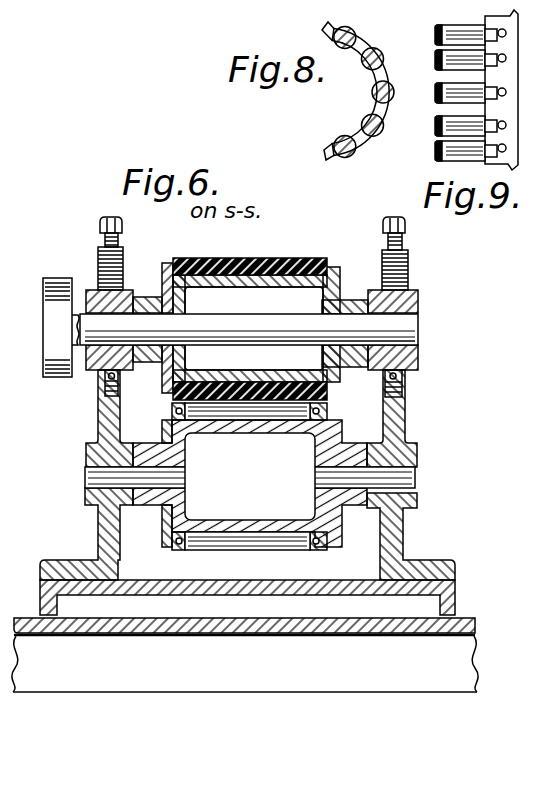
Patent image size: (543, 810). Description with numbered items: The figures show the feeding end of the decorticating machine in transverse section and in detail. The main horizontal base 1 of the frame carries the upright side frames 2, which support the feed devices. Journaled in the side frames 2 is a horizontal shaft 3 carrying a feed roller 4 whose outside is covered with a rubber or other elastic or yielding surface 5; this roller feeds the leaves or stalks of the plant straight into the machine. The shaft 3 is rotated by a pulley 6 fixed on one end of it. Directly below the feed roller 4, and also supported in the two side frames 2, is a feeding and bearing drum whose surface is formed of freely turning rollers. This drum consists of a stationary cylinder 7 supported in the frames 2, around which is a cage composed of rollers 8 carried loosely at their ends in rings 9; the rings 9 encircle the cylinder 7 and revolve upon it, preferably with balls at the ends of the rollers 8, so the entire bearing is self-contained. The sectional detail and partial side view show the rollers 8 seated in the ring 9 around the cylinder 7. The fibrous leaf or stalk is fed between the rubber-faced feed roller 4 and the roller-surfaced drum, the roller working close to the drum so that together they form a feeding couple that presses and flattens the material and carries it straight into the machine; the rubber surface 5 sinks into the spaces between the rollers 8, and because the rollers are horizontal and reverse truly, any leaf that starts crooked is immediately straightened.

In FIG. 6, the main horizontal base 1 is at (479, 604).
In FIG. 6, the side frames 2 is at (85, 447).
In FIG. 6, the horizontal shaft 3 is at (421, 325).
In FIG. 6, the feed roller 4 is at (338, 280).
In FIG. 6, the elastic surface 5 is at (275, 259).
In FIG. 6, the pulley 6 is at (43, 292).
In FIG. 6, the stationary cylinder 7 is at (341, 508).
In FIG. 6, the rollers 8 is at (289, 549).
In FIG. 8, the rollers 8 is at (343, 142).
In FIG. 9, the rollers 8 is at (436, 34).
In FIG. 6, the rings 9 is at (328, 410).
In FIG. 8, the rings 9 is at (361, 137).
In FIG. 9, the rings 9 is at (518, 45).